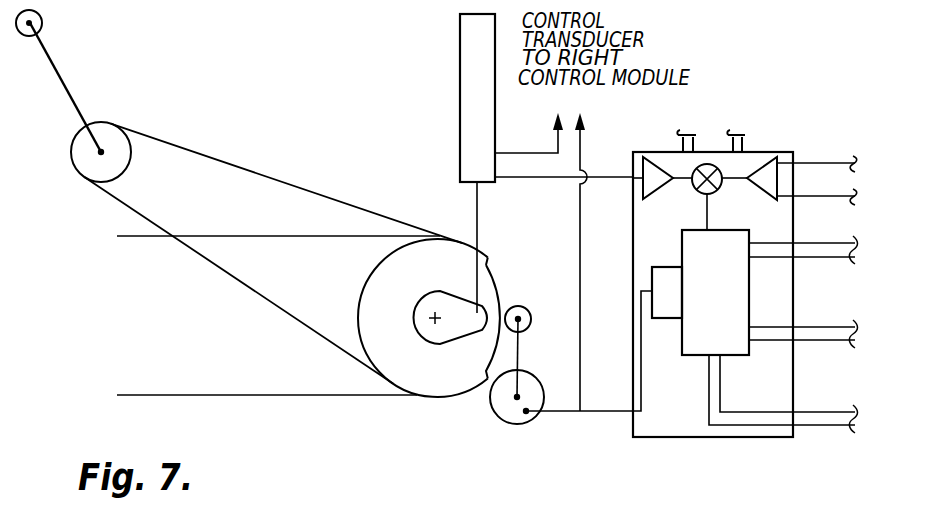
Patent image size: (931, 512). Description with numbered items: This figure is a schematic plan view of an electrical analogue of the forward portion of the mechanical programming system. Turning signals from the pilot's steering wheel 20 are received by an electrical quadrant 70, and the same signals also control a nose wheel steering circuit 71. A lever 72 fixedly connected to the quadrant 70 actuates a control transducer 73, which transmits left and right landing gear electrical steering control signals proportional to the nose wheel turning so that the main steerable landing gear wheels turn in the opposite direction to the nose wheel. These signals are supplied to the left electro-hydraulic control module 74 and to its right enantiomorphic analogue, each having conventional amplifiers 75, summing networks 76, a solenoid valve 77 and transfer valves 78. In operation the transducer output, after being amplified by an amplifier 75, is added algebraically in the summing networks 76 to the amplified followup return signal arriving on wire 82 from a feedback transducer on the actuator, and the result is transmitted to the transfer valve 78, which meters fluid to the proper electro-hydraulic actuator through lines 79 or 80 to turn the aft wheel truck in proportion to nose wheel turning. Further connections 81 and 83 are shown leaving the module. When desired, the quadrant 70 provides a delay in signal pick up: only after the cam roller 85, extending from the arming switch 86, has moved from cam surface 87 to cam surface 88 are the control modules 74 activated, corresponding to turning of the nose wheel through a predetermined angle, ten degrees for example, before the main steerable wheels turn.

The pilot's steering wheel 20 is at (42, 23).
The quadrant 70 is at (437, 277).
The nose wheel steering circuit 71 is at (190, 394).
The lever 72 is at (470, 330).
The control transducer 73 is at (460, 106).
The left electro-hydraulic control module 74 is at (683, 400).
The amplifiers 75 is at (652, 157).
The summing networks 76 is at (717, 194).
The solenoid valve 77 is at (678, 300).
The transfer valves 78 is at (728, 303).
The line 79 is at (822, 243).
The line 80 is at (822, 327).
The output line 81 is at (822, 412).
The wire 82 is at (822, 163).
The output line 83 is at (822, 196).
The cam roller 85 is at (531, 319).
The arming switch 86 is at (532, 378).
The cam surface 87 is at (500, 286).
The cam surface 88 is at (487, 256).